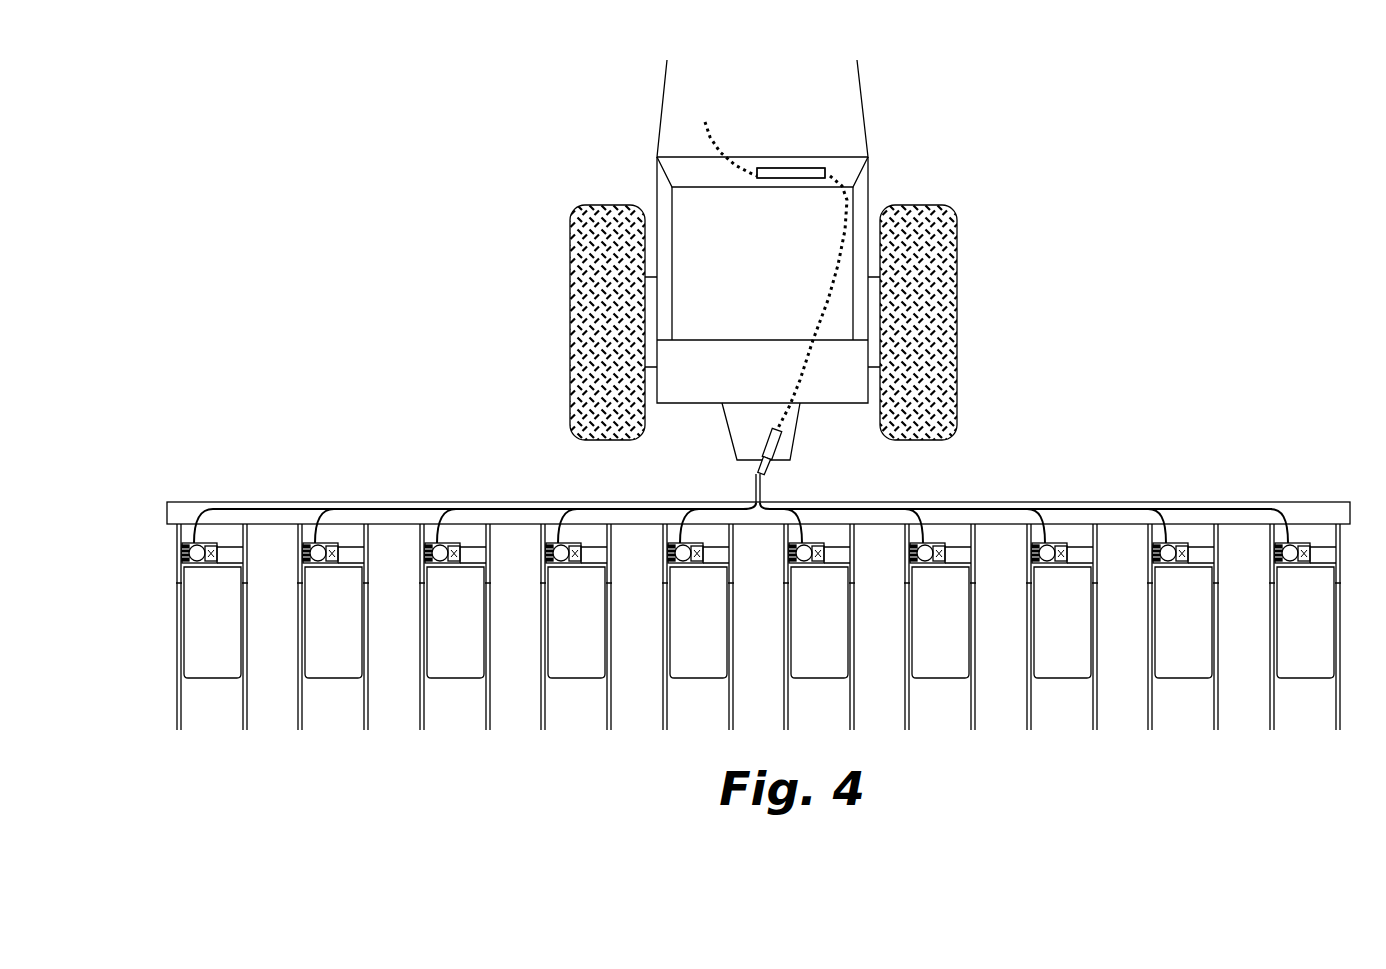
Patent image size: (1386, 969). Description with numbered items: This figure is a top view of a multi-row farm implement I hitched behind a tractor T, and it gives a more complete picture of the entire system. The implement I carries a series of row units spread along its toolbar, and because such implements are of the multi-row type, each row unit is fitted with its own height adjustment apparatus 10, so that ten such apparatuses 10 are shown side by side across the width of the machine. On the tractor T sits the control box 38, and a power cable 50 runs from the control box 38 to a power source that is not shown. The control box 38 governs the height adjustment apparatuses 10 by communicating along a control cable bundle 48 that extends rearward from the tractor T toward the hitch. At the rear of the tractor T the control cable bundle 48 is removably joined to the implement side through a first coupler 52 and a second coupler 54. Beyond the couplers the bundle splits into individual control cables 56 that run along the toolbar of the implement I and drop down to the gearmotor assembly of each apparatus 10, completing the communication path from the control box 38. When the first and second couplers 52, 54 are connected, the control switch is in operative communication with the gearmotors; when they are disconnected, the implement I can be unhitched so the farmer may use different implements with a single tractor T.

The height adjustment apparatus 10 is at (189, 540).
The control box 38 is at (784, 180).
The control cable bundle 48 is at (815, 325).
The power cable 50 is at (712, 140).
The first coupler 52 is at (768, 447).
The second coupler 54 is at (773, 460).
The control cable 56 is at (755, 487).
The tractor T is at (925, 163).
The implement I is at (1131, 468).